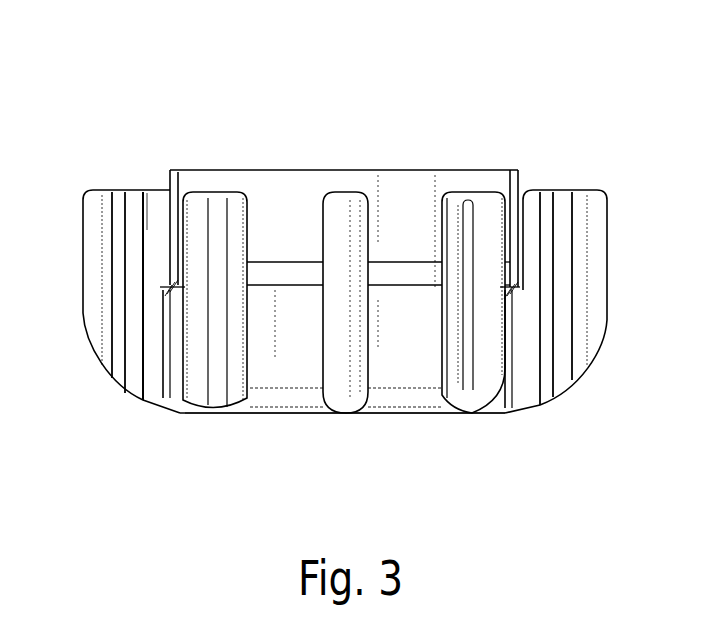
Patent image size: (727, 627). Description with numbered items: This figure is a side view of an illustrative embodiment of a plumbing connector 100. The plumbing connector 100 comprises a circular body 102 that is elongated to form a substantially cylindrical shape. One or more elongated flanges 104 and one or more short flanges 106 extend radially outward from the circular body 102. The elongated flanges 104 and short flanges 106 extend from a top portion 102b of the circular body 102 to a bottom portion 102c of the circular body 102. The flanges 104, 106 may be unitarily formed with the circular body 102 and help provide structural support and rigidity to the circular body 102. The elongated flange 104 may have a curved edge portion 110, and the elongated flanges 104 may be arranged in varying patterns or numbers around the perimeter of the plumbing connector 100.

The plumbing connector 100 is at (606, 62).
The circular body 102 is at (519, 172).
The top portion 102b is at (242, 166).
The bottom portion 102c is at (404, 418).
The elongated flange 104 is at (610, 218).
The short flange 106 is at (480, 389).
The curved edge portion 110 is at (96, 360).